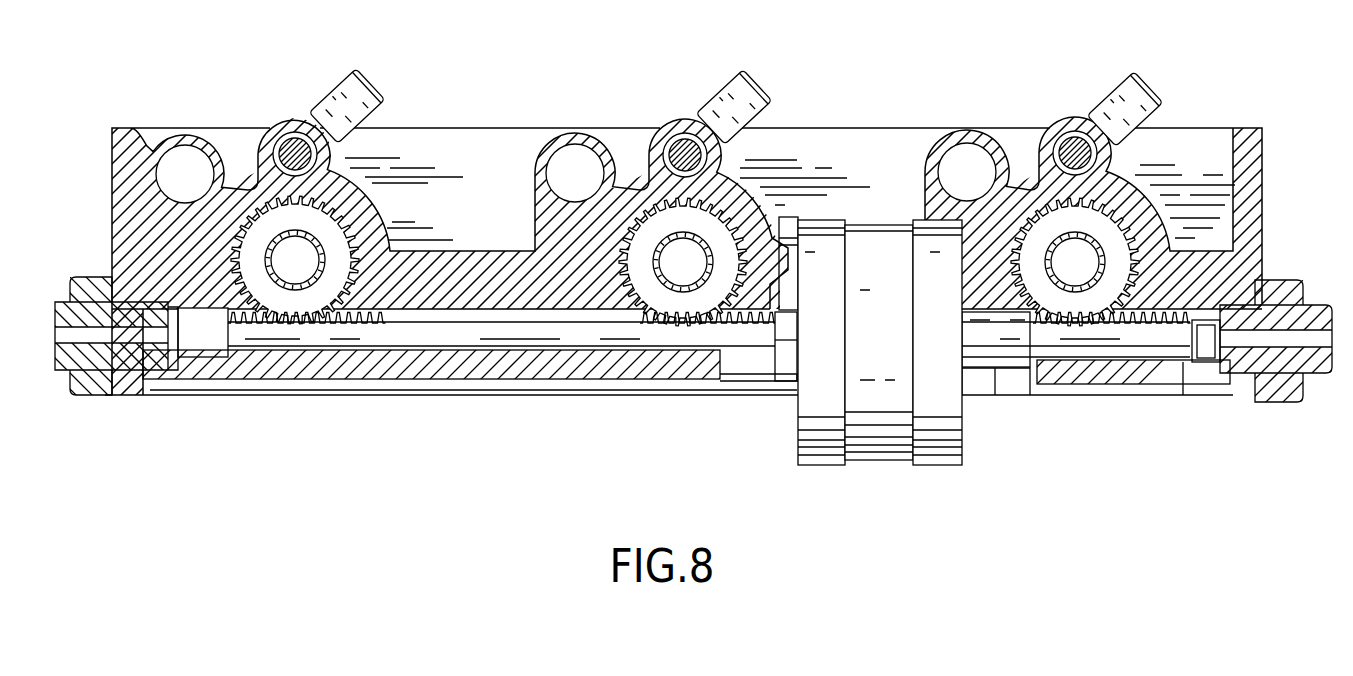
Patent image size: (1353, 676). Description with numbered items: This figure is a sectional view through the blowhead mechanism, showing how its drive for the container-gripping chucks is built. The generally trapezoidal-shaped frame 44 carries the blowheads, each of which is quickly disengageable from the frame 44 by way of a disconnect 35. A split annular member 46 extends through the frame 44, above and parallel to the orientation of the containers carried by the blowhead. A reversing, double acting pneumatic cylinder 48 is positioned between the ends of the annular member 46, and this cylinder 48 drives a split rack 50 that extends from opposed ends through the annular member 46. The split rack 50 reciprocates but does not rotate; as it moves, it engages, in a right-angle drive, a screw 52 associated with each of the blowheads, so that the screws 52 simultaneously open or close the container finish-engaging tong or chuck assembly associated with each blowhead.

The disconnect 35 is at (1177, 62).
The frame 44 is at (1262, 196).
The split annular member 46 is at (308, 396).
The reversing, double acting pneumatic cylinder 48 is at (957, 465).
The split rack 50 is at (718, 340).
The screw 52 is at (1082, 303).